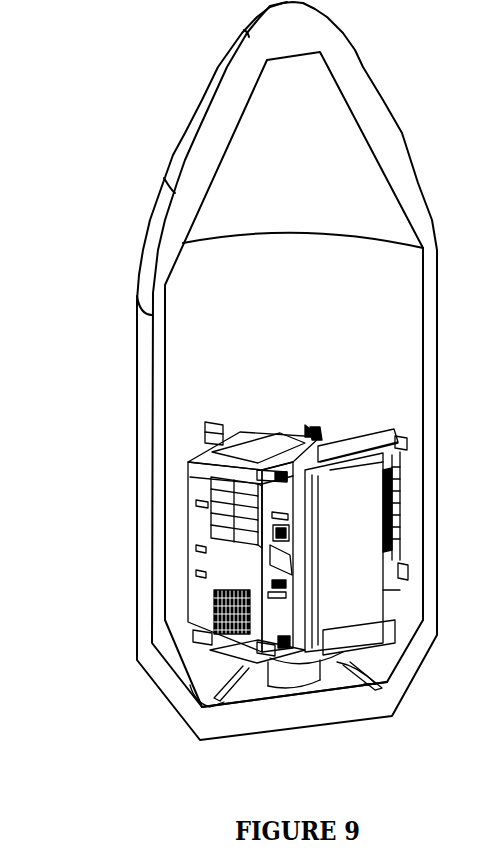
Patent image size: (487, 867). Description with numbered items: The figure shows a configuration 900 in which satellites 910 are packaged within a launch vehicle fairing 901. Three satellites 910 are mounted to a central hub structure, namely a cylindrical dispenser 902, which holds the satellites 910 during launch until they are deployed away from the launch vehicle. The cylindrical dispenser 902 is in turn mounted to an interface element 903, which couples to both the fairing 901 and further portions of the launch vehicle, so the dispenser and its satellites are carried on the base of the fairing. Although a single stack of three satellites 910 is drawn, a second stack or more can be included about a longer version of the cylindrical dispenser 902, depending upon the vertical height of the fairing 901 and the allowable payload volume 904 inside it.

The configuration 900 is at (110, 75).
The launch vehicle fairing 901 is at (136, 381).
The cylindrical dispenser 902 is at (315, 650).
The interface element 903 is at (386, 700).
The payload volume 904 is at (389, 285).
The satellites 910 is at (272, 452).